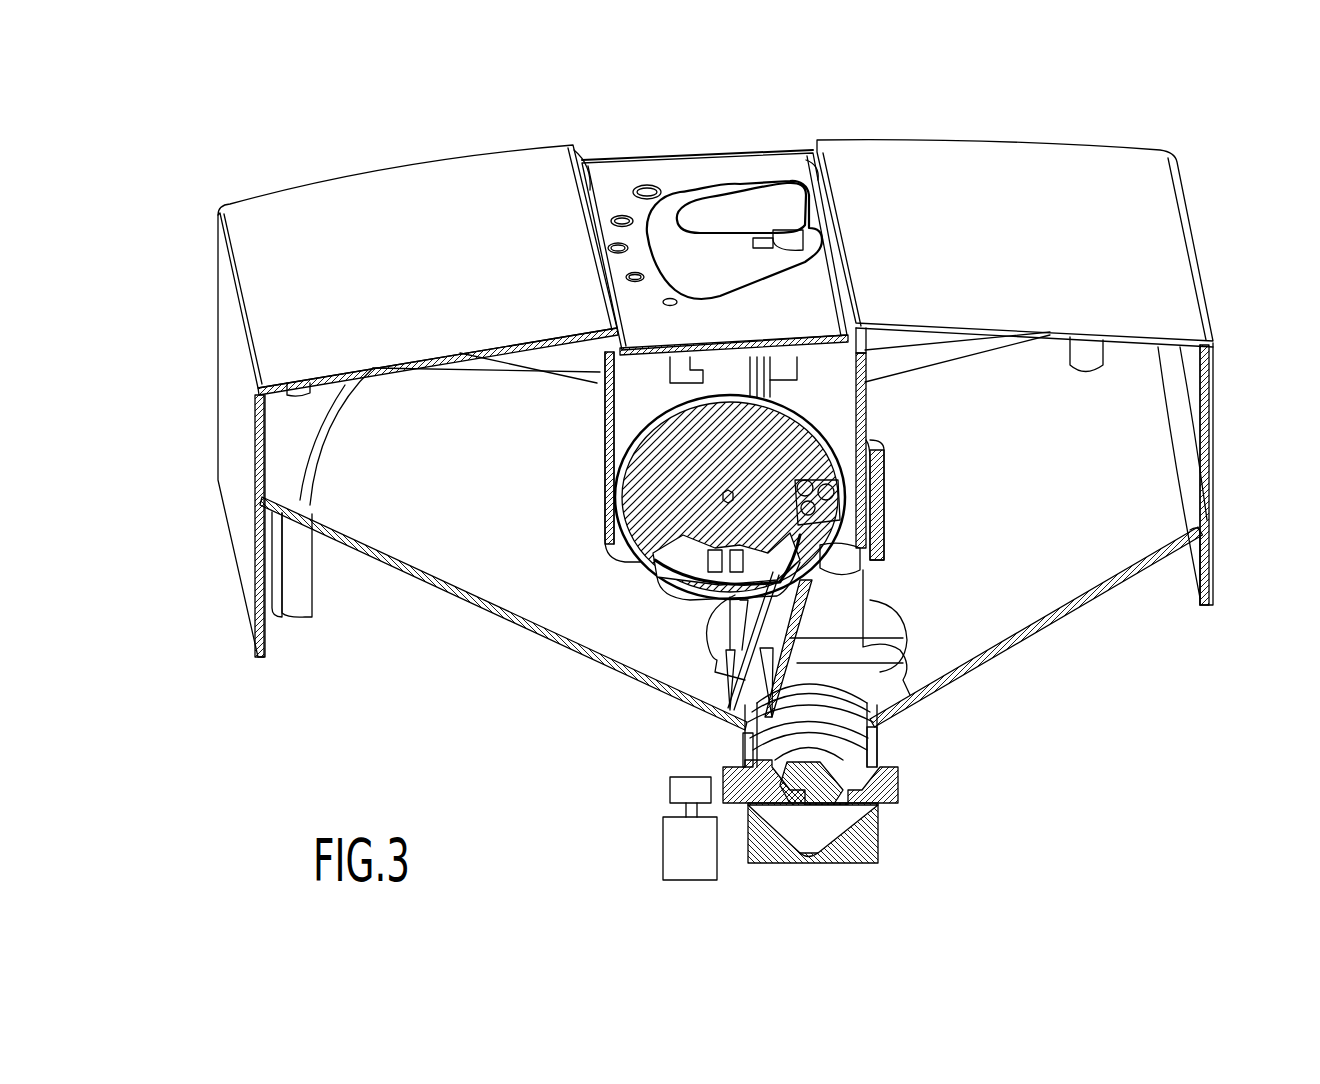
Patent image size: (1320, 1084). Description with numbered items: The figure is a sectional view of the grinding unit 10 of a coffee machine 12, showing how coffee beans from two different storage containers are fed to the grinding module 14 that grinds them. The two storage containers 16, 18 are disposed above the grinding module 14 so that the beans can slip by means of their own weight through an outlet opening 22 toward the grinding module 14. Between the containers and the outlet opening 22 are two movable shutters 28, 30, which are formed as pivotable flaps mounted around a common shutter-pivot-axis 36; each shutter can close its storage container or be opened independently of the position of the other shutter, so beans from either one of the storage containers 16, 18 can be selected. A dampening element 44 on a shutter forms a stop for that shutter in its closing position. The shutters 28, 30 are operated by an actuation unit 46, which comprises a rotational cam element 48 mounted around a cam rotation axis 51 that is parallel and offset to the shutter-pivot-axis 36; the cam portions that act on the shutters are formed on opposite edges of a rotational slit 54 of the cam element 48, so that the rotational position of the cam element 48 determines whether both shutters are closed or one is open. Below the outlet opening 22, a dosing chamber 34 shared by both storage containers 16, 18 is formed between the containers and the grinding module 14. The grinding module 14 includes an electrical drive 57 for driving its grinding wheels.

The grinding unit 10 is at (1218, 190).
The coffee machine 12 is at (208, 553).
The grinding module 14 is at (926, 785).
The storage container 16 is at (1150, 430).
The storage container 18 is at (430, 393).
The outlet opening 22 is at (742, 746).
The shutter 28 is at (742, 653).
The shutter 30 is at (893, 638).
The dosing chamber 34 is at (878, 753).
The shutter-pivot-axis 36 is at (838, 518).
The dampening element 44 is at (858, 555).
The actuation unit 46 is at (836, 405).
The cam element 48 is at (810, 437).
The cam rotation axis 51 is at (722, 498).
The rotational slit 54 is at (683, 553).
The electrical drive 57 is at (668, 851).